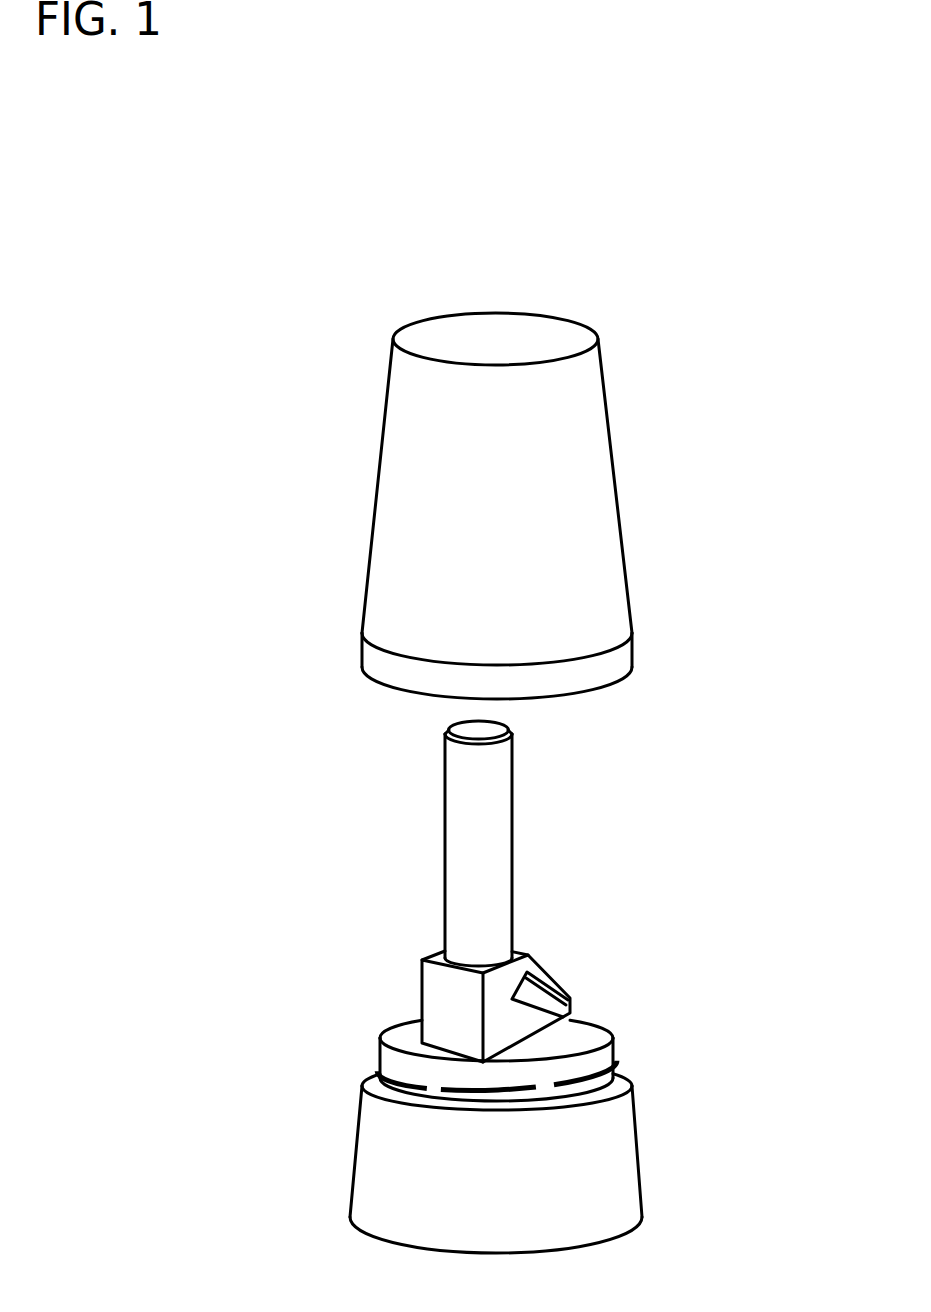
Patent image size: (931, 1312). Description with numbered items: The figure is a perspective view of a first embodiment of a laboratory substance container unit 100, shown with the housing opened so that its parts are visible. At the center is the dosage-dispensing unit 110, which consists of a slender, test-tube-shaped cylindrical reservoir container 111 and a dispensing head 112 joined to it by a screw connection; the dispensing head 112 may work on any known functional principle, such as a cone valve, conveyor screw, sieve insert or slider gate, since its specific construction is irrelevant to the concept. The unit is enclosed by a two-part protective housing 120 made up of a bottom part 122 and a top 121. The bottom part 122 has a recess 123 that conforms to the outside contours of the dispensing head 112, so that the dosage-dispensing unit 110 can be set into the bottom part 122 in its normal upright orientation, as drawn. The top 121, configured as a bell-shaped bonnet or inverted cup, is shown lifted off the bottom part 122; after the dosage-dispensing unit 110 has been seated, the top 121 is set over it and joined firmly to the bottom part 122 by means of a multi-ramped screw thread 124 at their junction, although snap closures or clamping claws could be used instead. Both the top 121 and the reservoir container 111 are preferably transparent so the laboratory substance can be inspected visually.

The laboratory substance container unit 100 is at (392, 262).
The dosage-dispensing unit 110 is at (386, 916).
The reservoir container 111 is at (465, 840).
The dispensing head 112 is at (444, 985).
The protective housing 120 is at (508, 783).
The top 121 is at (505, 522).
The bottom part 122 is at (575, 1152).
The recess 123 is at (410, 1033).
The multi-ramped screw thread 124 is at (614, 1064).